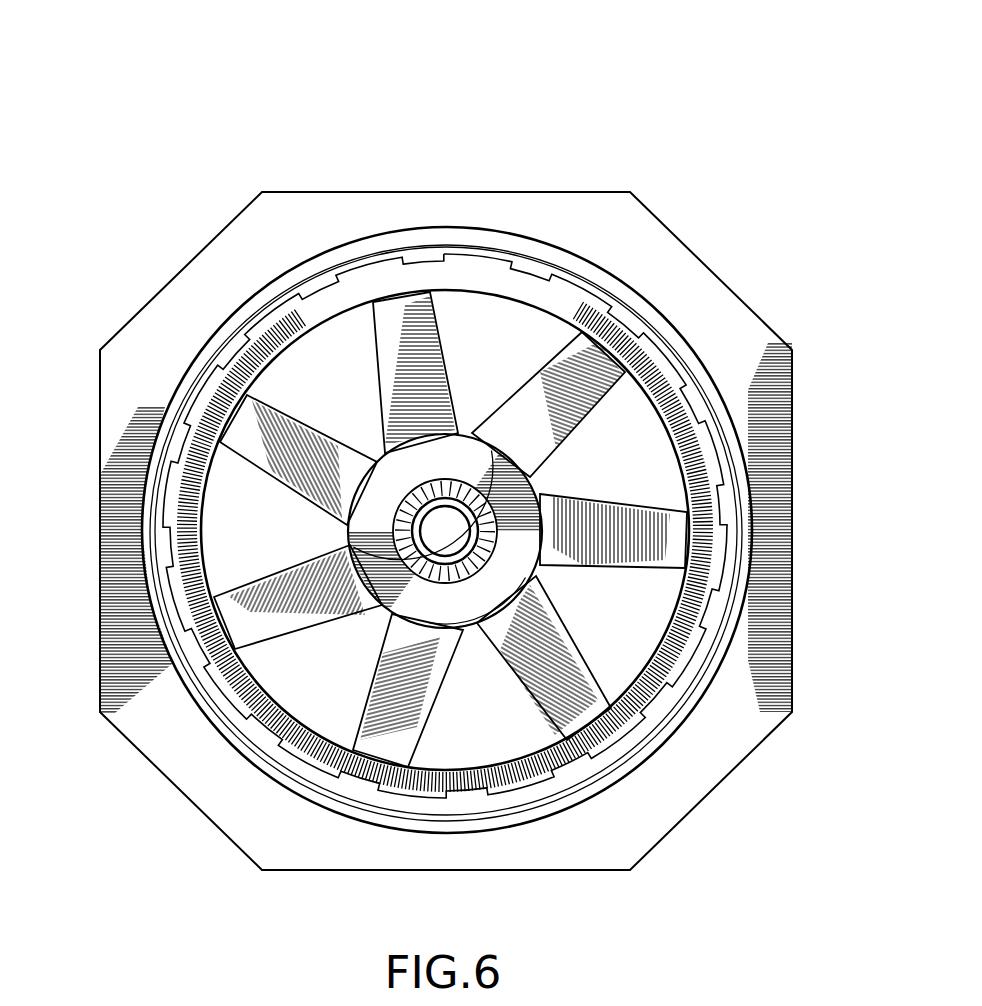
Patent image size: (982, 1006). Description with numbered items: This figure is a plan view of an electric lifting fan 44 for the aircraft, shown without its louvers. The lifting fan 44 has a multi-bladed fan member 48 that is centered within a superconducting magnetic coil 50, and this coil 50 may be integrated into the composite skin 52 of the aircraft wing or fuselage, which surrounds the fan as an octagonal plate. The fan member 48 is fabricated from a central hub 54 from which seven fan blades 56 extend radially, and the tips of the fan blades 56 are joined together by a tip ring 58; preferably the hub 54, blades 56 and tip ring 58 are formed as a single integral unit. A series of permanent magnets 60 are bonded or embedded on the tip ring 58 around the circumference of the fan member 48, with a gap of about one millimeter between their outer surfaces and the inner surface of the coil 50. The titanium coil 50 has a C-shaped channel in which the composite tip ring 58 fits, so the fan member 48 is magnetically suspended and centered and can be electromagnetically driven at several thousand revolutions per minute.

The electric lifting fan 44 is at (492, 148).
The multi-bladed fan member 48 is at (592, 658).
The superconducting magnetic coil 50 is at (377, 813).
The composite skin 52 is at (650, 826).
The central hub 54 is at (358, 534).
The fan blades 56 is at (294, 438).
The tip ring 58 is at (250, 702).
The permanent magnets 60 is at (328, 287).